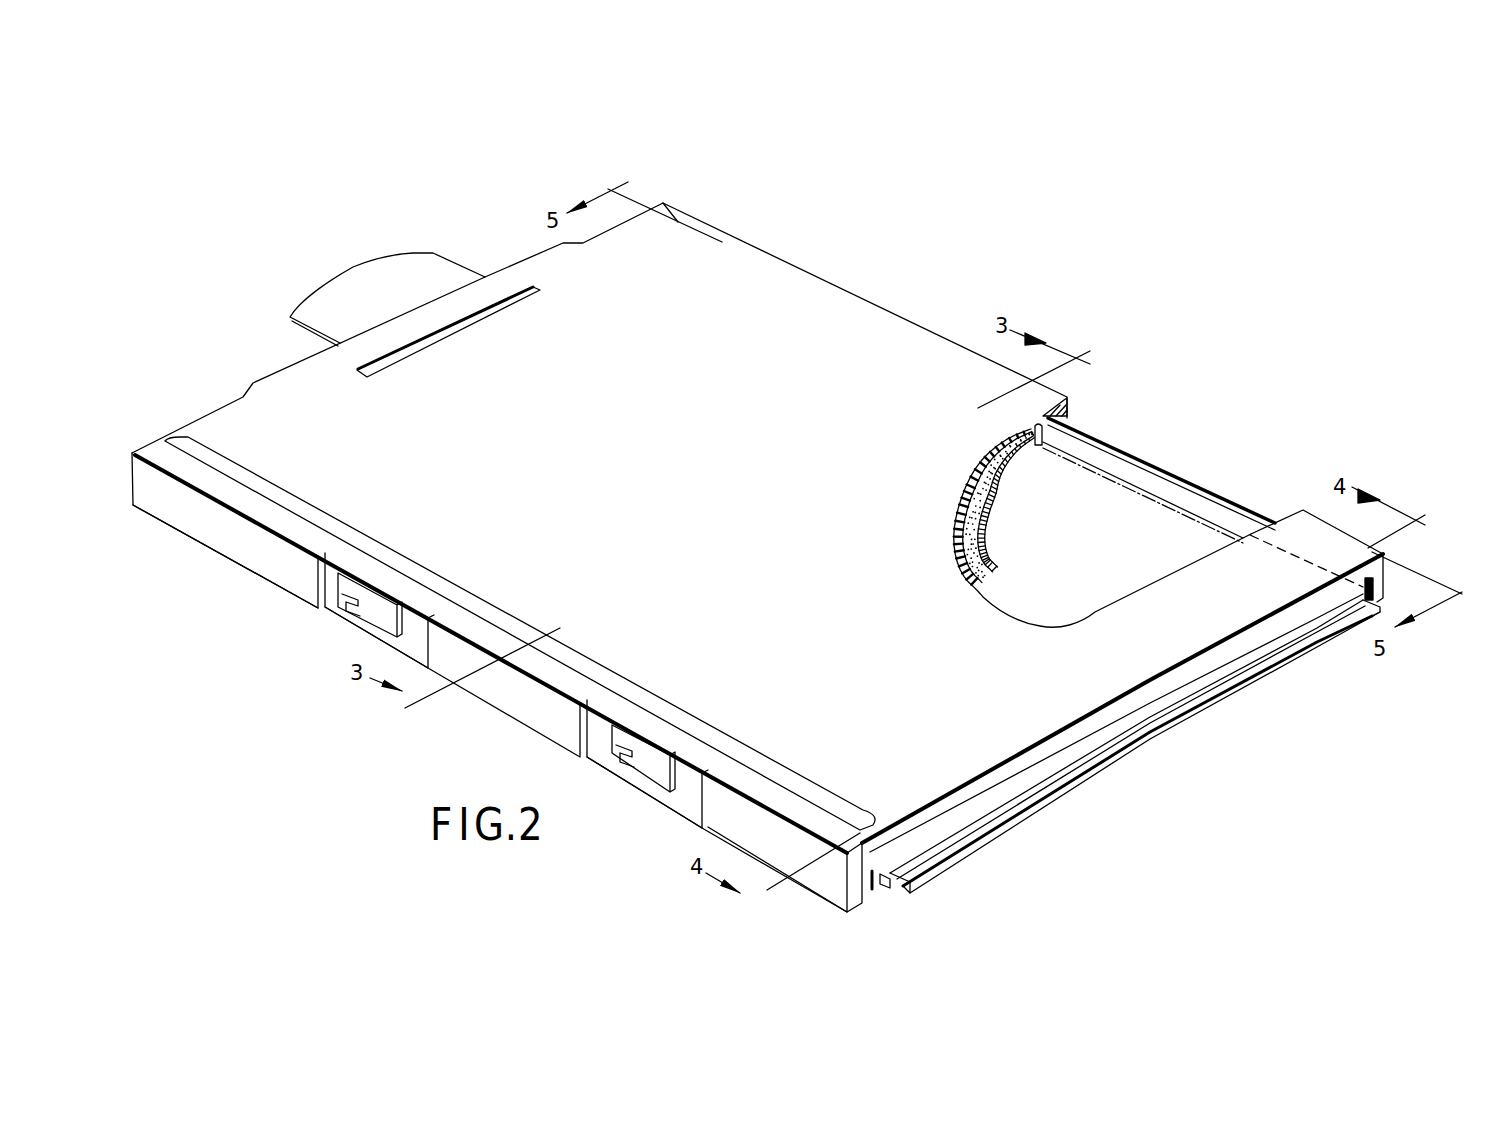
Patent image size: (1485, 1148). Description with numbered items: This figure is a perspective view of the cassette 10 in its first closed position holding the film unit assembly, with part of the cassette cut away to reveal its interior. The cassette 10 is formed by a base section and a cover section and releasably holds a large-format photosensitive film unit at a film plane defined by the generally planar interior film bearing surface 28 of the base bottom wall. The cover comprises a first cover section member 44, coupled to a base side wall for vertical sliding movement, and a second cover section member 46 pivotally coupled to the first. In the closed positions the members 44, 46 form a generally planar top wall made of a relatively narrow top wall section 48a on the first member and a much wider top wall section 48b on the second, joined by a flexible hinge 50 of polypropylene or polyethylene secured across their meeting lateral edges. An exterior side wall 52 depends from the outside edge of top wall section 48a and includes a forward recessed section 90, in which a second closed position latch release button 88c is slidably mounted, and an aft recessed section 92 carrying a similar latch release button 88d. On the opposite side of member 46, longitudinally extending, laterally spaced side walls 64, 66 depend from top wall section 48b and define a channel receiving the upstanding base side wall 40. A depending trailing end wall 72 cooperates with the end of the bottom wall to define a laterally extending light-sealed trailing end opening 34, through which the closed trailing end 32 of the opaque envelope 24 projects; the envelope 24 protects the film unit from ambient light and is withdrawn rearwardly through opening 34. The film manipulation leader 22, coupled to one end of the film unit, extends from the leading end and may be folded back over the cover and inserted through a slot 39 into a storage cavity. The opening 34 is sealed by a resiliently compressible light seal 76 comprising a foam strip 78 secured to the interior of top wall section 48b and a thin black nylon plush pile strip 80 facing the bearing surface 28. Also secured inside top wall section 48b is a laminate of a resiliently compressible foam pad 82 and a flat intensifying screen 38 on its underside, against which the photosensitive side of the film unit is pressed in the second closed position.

The cassette 10 is at (797, 243).
The film manipulation leader 22 is at (397, 287).
The opaque envelope 24 is at (1093, 490).
The interior film bearing surface 28 is at (1147, 495).
The closed trailing end 32 is at (1207, 702).
The trailing end opening 34 is at (893, 887).
The intensifying screen 38 is at (1017, 470).
The slot 39 is at (503, 307).
The side wall 40 is at (1205, 488).
The first cover section member 44 is at (205, 498).
The second cover section member 46 is at (250, 437).
The top wall section 48a is at (843, 852).
The top wall section 48b is at (870, 343).
The flexible hinge 50 is at (688, 732).
The exterior side wall 52 is at (724, 816).
The side wall 64 is at (1063, 413).
The side wall 66 is at (1040, 447).
The trailing end wall 72 is at (1368, 565).
The light seal 76 is at (1307, 643).
The strip of resiliently compressible material 78 is at (878, 876).
The nylon plush pile strip 80 is at (890, 880).
The foam pad 82 is at (977, 527).
The latch release button 88c is at (372, 605).
The latch release button 88d is at (653, 767).
The forward recessed section 90 is at (410, 627).
The aft recessed section 92 is at (688, 790).